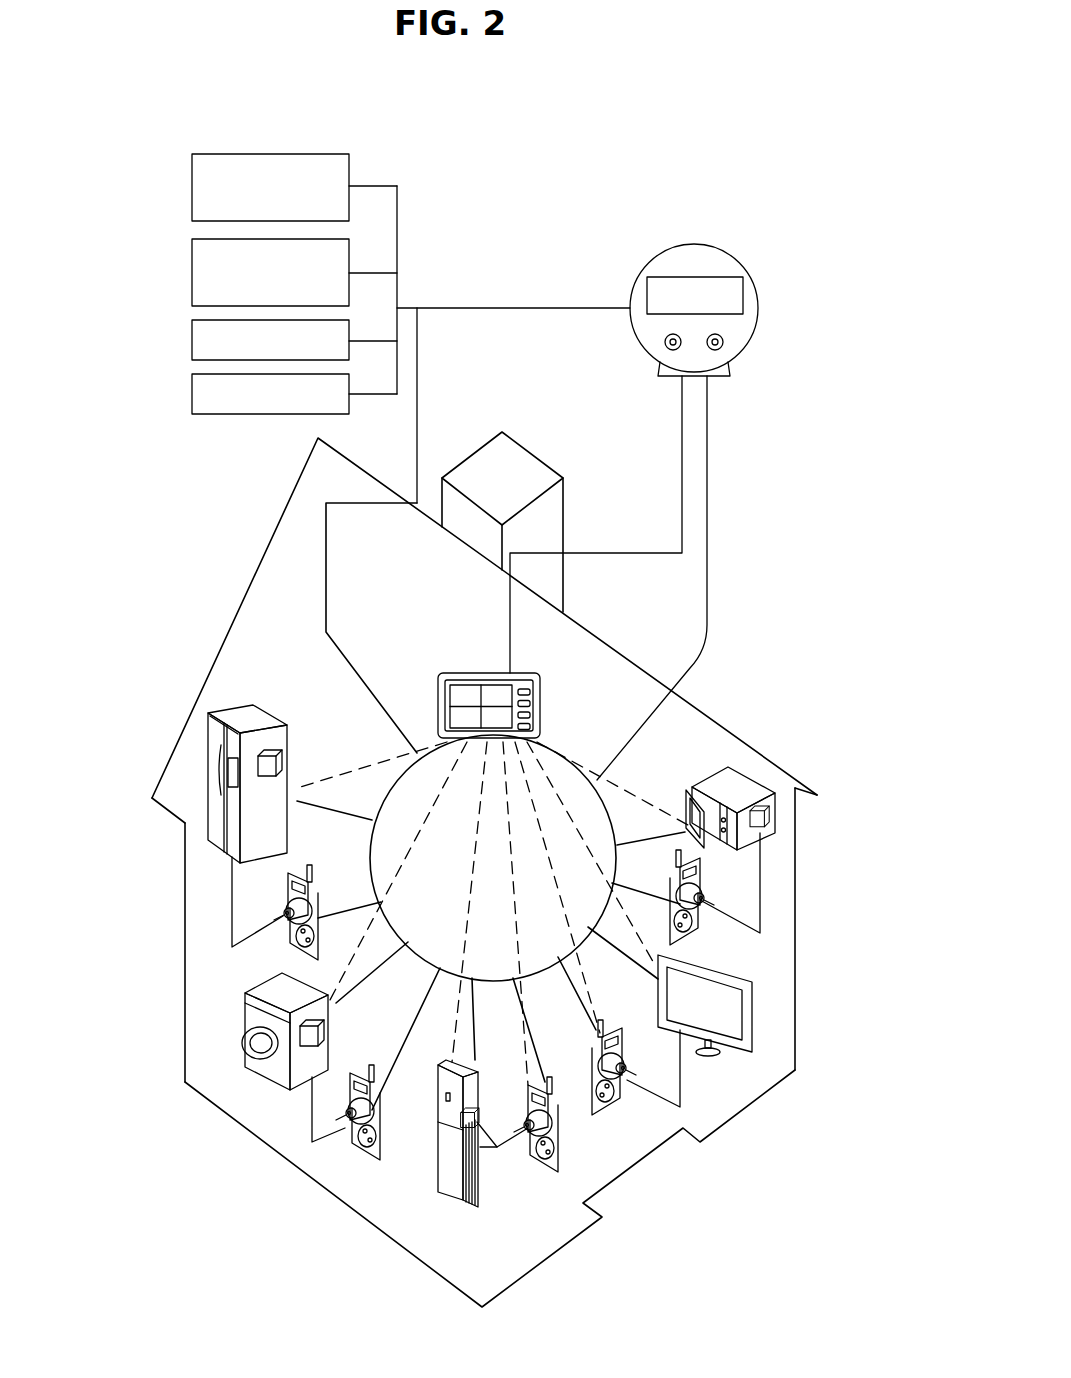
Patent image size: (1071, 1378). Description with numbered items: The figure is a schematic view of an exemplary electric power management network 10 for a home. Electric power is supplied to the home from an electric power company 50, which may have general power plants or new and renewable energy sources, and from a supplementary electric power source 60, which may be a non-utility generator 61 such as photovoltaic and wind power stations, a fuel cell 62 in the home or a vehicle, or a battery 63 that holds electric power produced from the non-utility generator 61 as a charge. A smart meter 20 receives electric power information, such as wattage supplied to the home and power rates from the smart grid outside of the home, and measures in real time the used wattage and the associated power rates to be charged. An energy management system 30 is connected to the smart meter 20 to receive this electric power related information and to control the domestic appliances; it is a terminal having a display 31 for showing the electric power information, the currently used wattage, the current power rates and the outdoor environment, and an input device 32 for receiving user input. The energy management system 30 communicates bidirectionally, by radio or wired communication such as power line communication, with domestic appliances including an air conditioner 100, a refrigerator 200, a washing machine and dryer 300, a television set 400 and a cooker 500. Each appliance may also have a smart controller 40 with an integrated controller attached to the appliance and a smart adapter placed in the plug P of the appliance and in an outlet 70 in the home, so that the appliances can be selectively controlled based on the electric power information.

The electric power management network 10 is at (390, 750).
The smart meter 20 is at (758, 308).
The energy management system (EMS) 30 is at (488, 661).
The display 31 is at (495, 685).
The input device 32 is at (535, 705).
The smart controller 40 is at (674, 1207).
The electric power company 50 is at (192, 186).
The supplementary electric power source 60 is at (112, 273).
The non-utility generator 61 is at (192, 273).
The fuel cell 62 is at (192, 341).
The battery 63 is at (192, 394).
The outlet 70 is at (283, 888).
The air conditioner 100 is at (525, 1172).
The refrigerator 200 is at (181, 784).
The washing machine and dryer 300 is at (227, 1087).
The television set 400 is at (752, 1012).
The cooker 500 is at (772, 765).
The plug P is at (522, 1122).